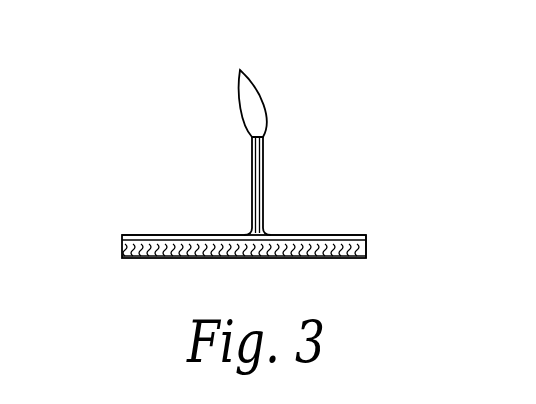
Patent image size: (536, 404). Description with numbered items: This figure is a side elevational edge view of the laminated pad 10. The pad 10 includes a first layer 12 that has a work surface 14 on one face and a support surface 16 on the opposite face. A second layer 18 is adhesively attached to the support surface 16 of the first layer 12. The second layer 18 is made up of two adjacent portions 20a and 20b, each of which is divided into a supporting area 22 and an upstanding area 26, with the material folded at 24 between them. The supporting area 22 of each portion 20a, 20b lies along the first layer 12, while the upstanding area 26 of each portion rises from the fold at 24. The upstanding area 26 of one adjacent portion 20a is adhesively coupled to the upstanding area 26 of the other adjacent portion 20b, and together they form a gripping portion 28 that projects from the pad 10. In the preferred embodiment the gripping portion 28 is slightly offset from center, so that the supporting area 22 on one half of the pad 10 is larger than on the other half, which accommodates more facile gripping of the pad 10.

The laminated pad 10 is at (368, 118).
The first layer 12 is at (122, 247).
The work surface 14 is at (352, 258).
The support surface 16 is at (122, 238).
The second layer 18 is at (366, 235).
The adjacent portion 20a is at (137, 233).
The adjacent portion 20b is at (338, 233).
The supporting area 22 is at (182, 233).
The fold 24 is at (247, 233).
The upstanding area 26 is at (252, 165).
The gripping portion 28 is at (240, 71).